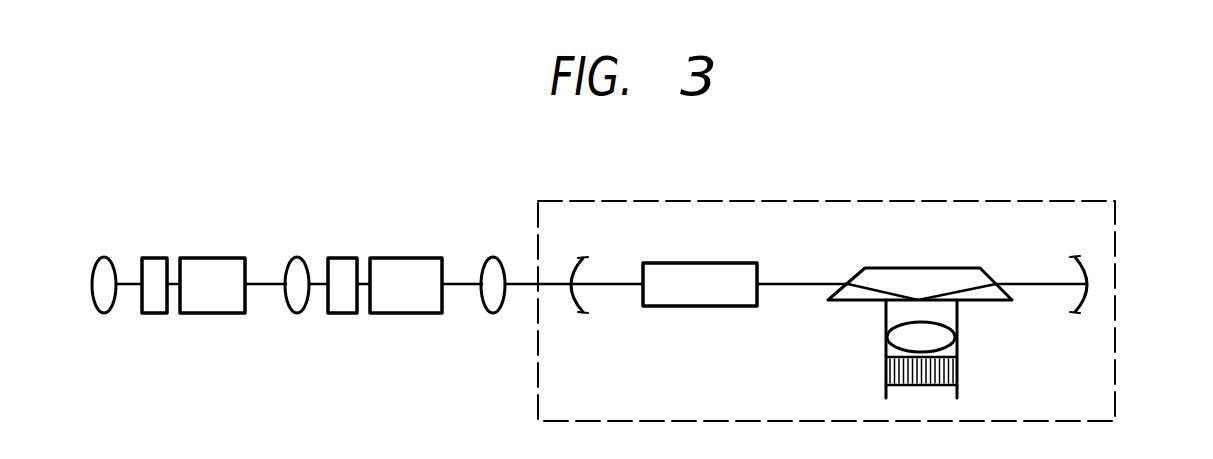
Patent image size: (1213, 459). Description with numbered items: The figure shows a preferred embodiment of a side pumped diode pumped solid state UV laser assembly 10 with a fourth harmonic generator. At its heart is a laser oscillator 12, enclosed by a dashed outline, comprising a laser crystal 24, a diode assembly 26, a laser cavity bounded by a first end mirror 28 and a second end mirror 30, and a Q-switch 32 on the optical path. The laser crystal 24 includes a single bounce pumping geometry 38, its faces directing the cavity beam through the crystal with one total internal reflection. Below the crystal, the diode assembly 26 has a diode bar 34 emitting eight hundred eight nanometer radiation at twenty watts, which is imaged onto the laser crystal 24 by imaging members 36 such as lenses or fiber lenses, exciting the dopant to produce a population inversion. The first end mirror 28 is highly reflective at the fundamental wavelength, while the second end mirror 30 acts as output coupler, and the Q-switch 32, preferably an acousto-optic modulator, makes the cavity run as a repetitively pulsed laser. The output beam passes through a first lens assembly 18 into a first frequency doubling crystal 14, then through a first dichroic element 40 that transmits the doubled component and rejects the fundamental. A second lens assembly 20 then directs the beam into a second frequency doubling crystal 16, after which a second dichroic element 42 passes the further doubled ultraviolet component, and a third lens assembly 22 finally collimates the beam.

The UV laser assembly 10 is at (598, 175).
The laser oscillator 12 is at (790, 213).
The first frequency doubling crystal 14 is at (403, 314).
The second frequency doubling crystal 16 is at (212, 314).
The first lens assembly 18 is at (493, 314).
The second lens assembly 20 is at (298, 314).
The third lens assembly 22 is at (98, 313).
The laser crystal 24 is at (984, 268).
The diode assembly 26 is at (972, 343).
The first end mirror 28 is at (1084, 262).
The second end mirror 30 is at (577, 311).
The Q-switch 32 is at (695, 307).
The diode bar 34 is at (953, 368).
The imaging members 36 is at (952, 325).
The single bounce pumping geometry 38 is at (876, 292).
The first dichroic element 40 is at (340, 257).
The second dichroic element 42 is at (155, 257).